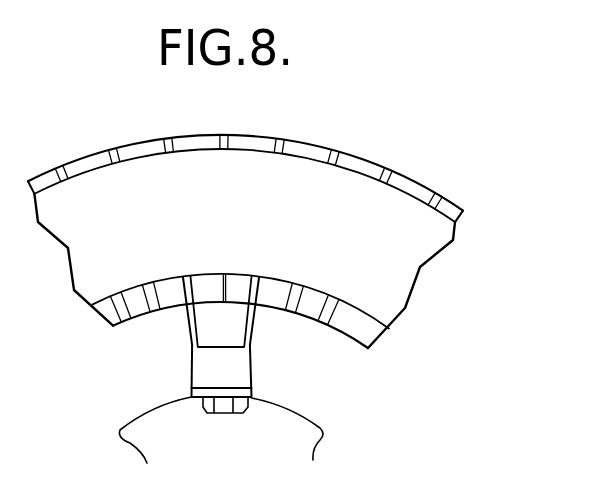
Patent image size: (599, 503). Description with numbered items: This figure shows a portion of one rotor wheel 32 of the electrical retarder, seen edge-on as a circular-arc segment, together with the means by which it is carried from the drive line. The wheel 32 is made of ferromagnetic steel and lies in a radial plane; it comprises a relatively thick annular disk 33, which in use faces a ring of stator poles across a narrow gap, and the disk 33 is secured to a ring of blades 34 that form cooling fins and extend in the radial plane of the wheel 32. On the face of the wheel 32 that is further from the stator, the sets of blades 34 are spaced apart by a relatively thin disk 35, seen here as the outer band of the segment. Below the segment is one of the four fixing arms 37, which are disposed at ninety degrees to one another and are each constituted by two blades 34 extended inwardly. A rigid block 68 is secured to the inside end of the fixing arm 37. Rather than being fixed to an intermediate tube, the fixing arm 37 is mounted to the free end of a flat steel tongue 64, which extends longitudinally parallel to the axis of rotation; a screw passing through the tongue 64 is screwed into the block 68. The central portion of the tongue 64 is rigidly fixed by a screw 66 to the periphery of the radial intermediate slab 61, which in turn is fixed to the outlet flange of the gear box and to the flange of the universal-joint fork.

The wheel 32 is at (318, 145).
The annular disk 33 is at (405, 228).
The blades 34 is at (186, 291).
The thin disk 35 is at (359, 156).
The fixing arm 37 is at (189, 366).
The radial intermediate slab 61 is at (295, 442).
The steel tongue 64 is at (252, 393).
The screw 66 is at (225, 413).
The rigid block 68 is at (240, 362).